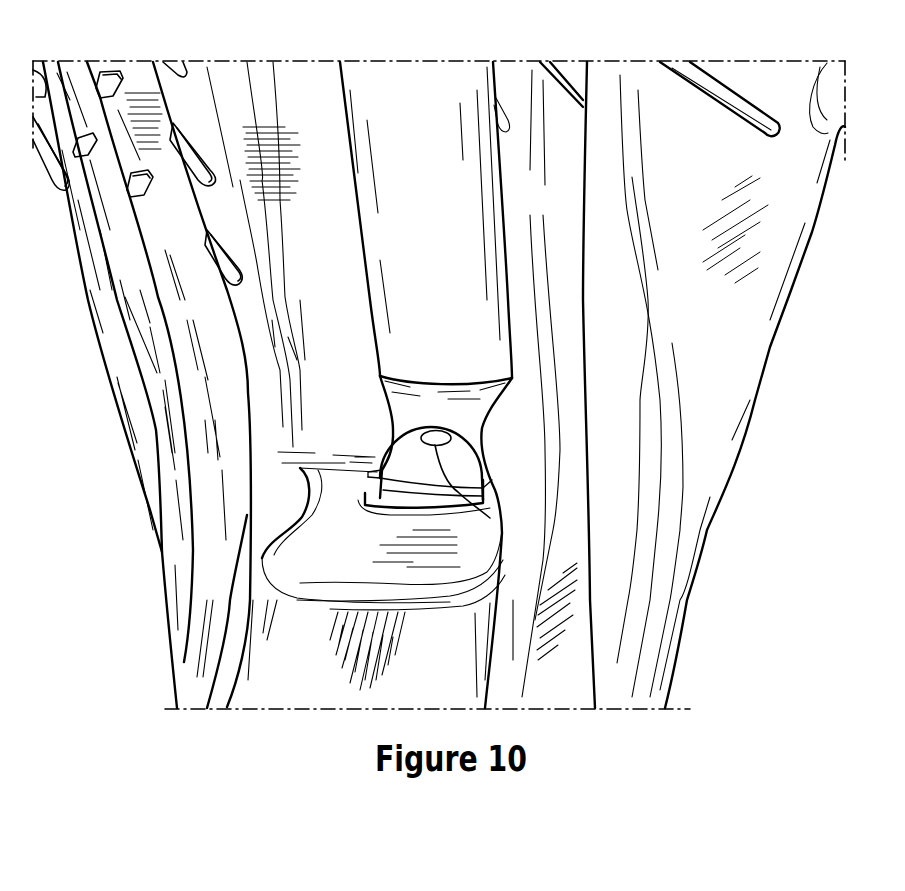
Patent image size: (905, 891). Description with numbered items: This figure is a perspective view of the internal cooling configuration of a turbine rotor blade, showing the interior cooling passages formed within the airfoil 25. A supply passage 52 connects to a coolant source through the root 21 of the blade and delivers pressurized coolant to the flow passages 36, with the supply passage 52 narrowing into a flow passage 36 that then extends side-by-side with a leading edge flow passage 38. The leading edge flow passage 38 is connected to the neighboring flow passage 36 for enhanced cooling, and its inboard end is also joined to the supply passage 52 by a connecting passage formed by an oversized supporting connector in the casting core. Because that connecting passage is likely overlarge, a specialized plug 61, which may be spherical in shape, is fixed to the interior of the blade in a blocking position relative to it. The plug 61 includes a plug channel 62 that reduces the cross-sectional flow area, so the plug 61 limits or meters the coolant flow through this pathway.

The root 21 is at (131, 678).
The airfoil 25 is at (82, 364).
The flow passage 36 is at (273, 107).
The leading edge flow passage 38 is at (398, 140).
The supply passage 52 is at (382, 680).
The plug 61 is at (460, 455).
The plug channel 62 is at (490, 518).